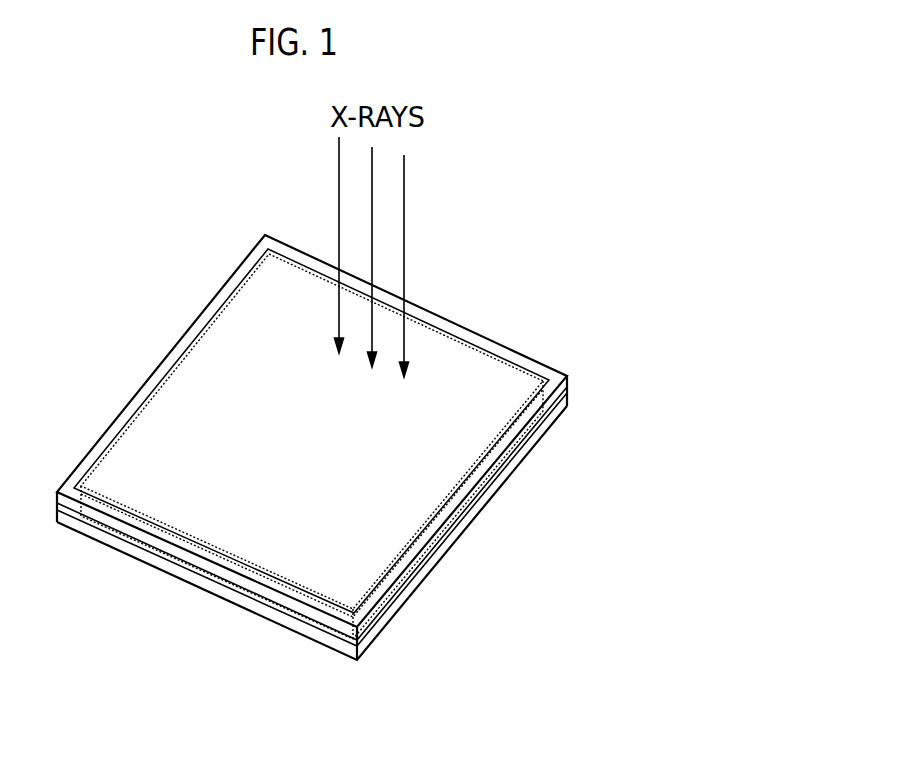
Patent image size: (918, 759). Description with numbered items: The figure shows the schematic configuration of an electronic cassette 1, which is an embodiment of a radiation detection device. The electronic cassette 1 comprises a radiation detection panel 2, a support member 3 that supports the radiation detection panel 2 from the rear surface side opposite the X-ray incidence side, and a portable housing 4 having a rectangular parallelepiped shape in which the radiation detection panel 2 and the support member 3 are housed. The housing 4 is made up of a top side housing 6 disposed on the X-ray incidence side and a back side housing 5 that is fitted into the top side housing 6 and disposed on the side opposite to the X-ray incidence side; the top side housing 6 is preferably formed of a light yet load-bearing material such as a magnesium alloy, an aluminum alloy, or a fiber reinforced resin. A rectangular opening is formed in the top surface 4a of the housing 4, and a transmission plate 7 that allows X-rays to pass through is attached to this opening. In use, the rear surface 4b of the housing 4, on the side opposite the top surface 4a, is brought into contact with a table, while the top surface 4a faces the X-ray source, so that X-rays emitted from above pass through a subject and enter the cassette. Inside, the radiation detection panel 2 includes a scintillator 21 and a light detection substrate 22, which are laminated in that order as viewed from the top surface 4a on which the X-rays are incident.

The electronic cassette 1 is at (513, 314).
The radiation detection panel 2 is at (74, 577).
The scintillator 21 is at (110, 500).
The light detection substrate 22 is at (137, 518).
The support member 3 is at (342, 618).
The housing 4 is at (268, 698).
The top surface 4a is at (265, 235).
The rear surface 4b is at (185, 582).
The back side housing 5 is at (245, 605).
The top side housing 6 is at (283, 607).
The transmission plate 7 is at (202, 322).